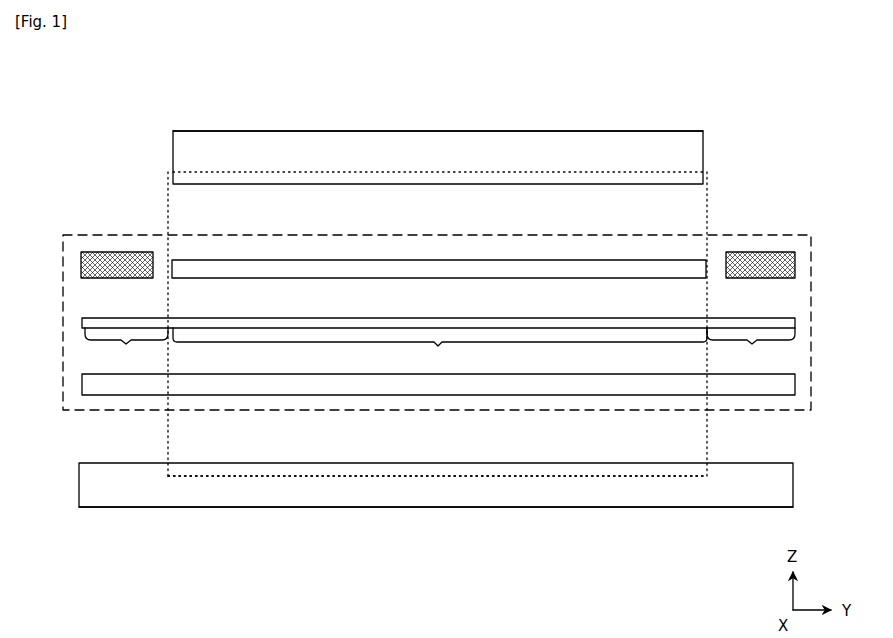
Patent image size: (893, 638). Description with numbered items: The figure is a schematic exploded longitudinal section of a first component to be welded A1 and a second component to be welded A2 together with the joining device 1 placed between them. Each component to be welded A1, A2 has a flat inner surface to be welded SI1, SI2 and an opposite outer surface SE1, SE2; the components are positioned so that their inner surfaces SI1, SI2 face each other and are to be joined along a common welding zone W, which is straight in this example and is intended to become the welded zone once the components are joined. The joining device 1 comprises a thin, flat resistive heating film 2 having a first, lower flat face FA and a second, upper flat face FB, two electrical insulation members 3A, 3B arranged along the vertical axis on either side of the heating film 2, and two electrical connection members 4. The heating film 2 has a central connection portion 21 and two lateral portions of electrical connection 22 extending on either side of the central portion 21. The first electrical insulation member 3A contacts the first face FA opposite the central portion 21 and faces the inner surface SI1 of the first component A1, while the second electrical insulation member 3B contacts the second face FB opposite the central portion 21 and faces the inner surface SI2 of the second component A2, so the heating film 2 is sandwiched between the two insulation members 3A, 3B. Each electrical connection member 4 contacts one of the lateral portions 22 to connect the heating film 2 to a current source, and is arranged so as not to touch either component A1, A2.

The joining device 1 is at (63, 372).
The resistive heating film 2 is at (469, 328).
The central connection portion 21 is at (514, 350).
The lateral portions of electrical connection 22 is at (440, 348).
The first electrical insulation member 3A is at (795, 385).
The second electrical insulation member 3B is at (687, 260).
The electrical connection members 4 is at (81, 265).
The first component to be welded A1 is at (95, 507).
The second component to be welded A2 is at (398, 131).
The common welding zone W is at (322, 480).
The outer surface of the first component SE1 is at (631, 509).
The outer surface of the second component SE2 is at (527, 130).
The inner surface to be welded of the first component SI1 is at (592, 459).
The inner surface to be welded of the second component SI2 is at (549, 194).
The first flat face FA is at (778, 336).
The second flat face FB is at (772, 317).